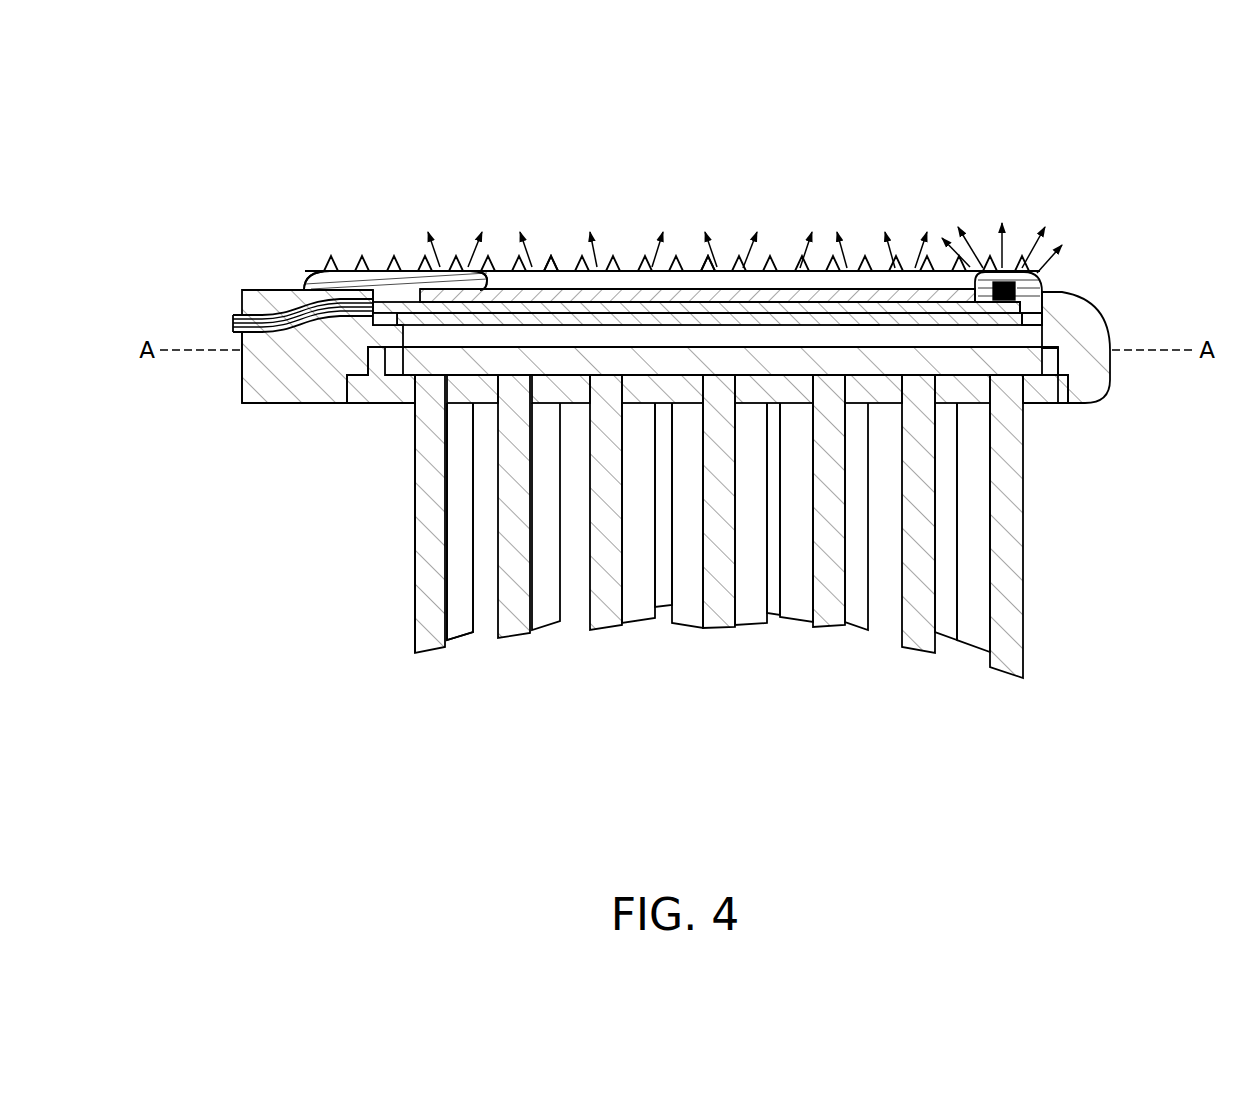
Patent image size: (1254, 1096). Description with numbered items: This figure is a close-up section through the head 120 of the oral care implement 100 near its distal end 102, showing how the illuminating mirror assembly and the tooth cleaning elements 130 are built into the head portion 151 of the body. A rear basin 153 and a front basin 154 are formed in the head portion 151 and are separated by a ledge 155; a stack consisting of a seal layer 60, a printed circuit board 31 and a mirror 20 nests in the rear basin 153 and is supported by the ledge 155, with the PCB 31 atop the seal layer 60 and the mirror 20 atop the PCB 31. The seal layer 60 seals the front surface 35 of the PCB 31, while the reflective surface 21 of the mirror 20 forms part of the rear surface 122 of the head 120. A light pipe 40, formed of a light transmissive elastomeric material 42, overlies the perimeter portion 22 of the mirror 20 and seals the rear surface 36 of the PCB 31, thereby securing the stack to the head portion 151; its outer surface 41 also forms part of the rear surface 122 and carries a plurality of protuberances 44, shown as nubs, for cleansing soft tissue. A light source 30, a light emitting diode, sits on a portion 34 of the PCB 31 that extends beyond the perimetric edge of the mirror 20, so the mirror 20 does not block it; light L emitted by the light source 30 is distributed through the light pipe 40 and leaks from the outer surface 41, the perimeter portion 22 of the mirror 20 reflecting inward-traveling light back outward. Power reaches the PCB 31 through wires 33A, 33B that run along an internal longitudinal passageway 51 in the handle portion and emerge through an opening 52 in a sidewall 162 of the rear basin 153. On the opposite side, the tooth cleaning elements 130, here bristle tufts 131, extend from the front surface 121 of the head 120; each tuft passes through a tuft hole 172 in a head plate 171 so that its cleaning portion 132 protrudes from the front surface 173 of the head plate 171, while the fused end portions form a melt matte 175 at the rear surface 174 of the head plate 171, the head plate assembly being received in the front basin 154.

The oral care implement 100 is at (1155, 105).
The distal end 102 is at (1108, 343).
The head 120 is at (1088, 410).
The front surface of the head 121 is at (380, 538).
The rear surface of the head 122 is at (648, 266).
The tooth cleaning elements 130 is at (468, 405).
The bristle tufts 131 is at (420, 625).
The cleaning portion 132 is at (437, 577).
The head portion 151 is at (1057, 322).
The rear basin 153 is at (1042, 285).
The front basin 154 is at (357, 405).
The ledge 155 is at (363, 347).
The sidewall of the rear basin 162 is at (300, 340).
The head plate 171 is at (1058, 388).
The tuft holes 172 is at (530, 393).
The front surface of the head plate 173 is at (413, 525).
The rear surface of the head plate 174 is at (856, 300).
The melt matte 175 is at (925, 353).
The mirror 20 is at (815, 297).
The reflective surface 21 is at (773, 300).
The perimeter portion of the mirror 22 is at (448, 250).
The light source 30 is at (1010, 268).
The printed circuit board 31 is at (889, 306).
The electrical wire 33A is at (262, 318).
The electrical wire 33B is at (243, 331).
The portion of the PCB 34 is at (384, 290).
The front surface of the PCB 35 is at (442, 316).
The rear surface of the PCB 36 is at (793, 372).
The light pipe 40 is at (1044, 276).
The outer surface of the light pipe 41 is at (410, 270).
The light transmissive elastomeric material 42 is at (372, 292).
The protuberances 44 is at (572, 270).
The internal longitudinal passageway 51 is at (305, 298).
The opening 52 is at (370, 272).
The seal layer 60 is at (568, 318).
The light L is at (452, 270).